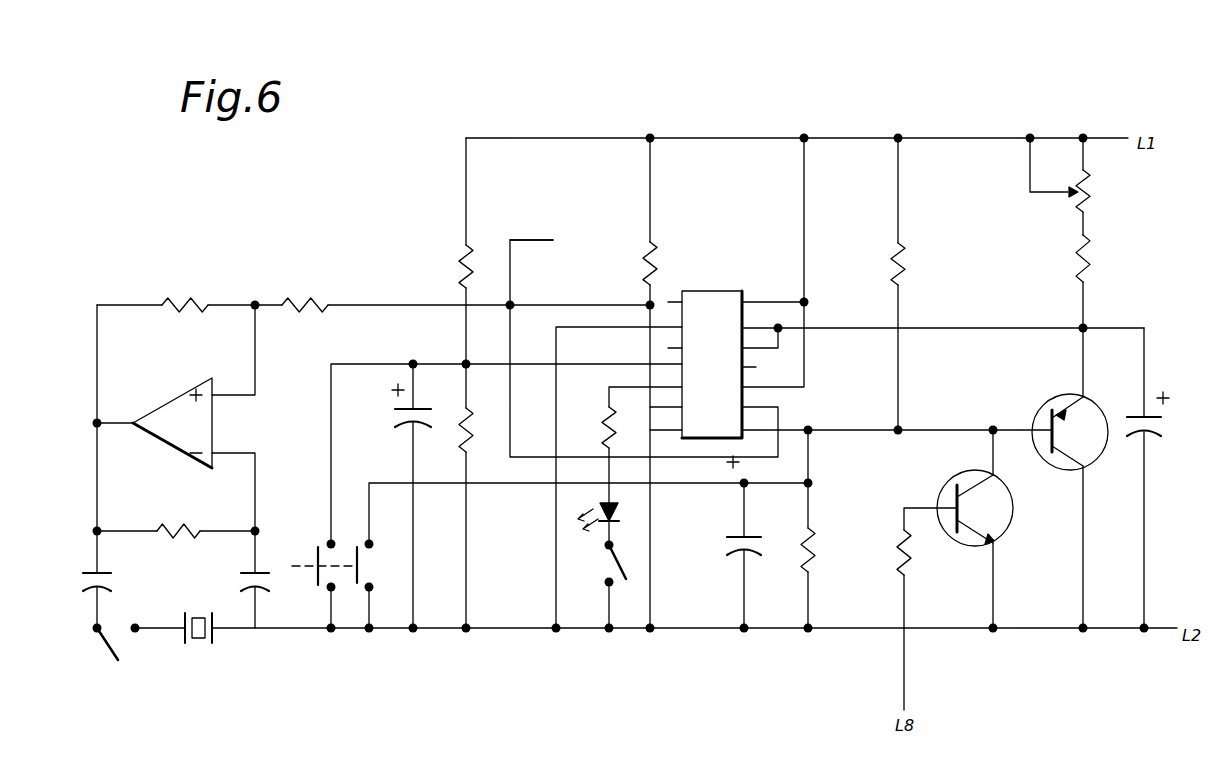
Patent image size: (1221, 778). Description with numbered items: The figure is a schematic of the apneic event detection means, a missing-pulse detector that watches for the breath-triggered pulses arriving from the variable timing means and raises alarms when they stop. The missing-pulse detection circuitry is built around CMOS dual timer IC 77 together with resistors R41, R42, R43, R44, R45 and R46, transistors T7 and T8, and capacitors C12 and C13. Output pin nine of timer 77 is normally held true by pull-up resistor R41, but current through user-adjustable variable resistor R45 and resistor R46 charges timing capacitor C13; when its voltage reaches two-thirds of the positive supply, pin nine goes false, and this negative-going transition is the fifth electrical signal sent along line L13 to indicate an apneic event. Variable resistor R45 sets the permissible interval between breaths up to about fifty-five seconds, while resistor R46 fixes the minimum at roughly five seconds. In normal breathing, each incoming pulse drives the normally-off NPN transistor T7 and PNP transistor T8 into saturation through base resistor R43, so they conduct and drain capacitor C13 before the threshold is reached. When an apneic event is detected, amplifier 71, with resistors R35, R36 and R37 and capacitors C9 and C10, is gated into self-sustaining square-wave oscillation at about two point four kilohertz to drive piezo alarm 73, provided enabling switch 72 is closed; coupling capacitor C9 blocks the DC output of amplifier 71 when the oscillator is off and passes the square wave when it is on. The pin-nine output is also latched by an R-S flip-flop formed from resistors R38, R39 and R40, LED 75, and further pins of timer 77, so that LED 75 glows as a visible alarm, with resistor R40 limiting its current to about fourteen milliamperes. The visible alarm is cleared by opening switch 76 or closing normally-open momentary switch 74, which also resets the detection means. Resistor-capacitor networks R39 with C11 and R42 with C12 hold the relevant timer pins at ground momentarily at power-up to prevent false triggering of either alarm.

The amplifier 71 is at (172, 400).
The enabling switch 72 is at (112, 626).
The piezo alarm 73 is at (213, 640).
The normally-open momentary switch 74 is at (321, 542).
The LED 75 is at (613, 530).
The switch 76 is at (604, 561).
The CMOS dual timer IC 77 is at (738, 290).
The resistor R35 is at (178, 521).
The resistor R36 is at (185, 295).
The resistor R37 is at (305, 295).
The resistor R38 is at (482, 266).
The resistor R39 is at (483, 430).
The resistor R40 is at (590, 427).
The pull-up resistor R41 is at (672, 263).
The resistor R42 is at (827, 550).
The base resistor R43 is at (922, 552).
The resistor R44 is at (917, 264).
The user-adjustable variable resistor R45 is at (1103, 191).
The resistor R46 is at (1103, 258).
The coupling capacitor C9 is at (111, 581).
The capacitor C10 is at (270, 582).
The capacitor C11 is at (392, 406).
The capacitor C12 is at (727, 544).
The timing capacitor C13 is at (1165, 416).
The NPN switching transistor T7 is at (966, 503).
The PNP switching transistor T8 is at (1062, 428).
The line L13 is at (544, 255).